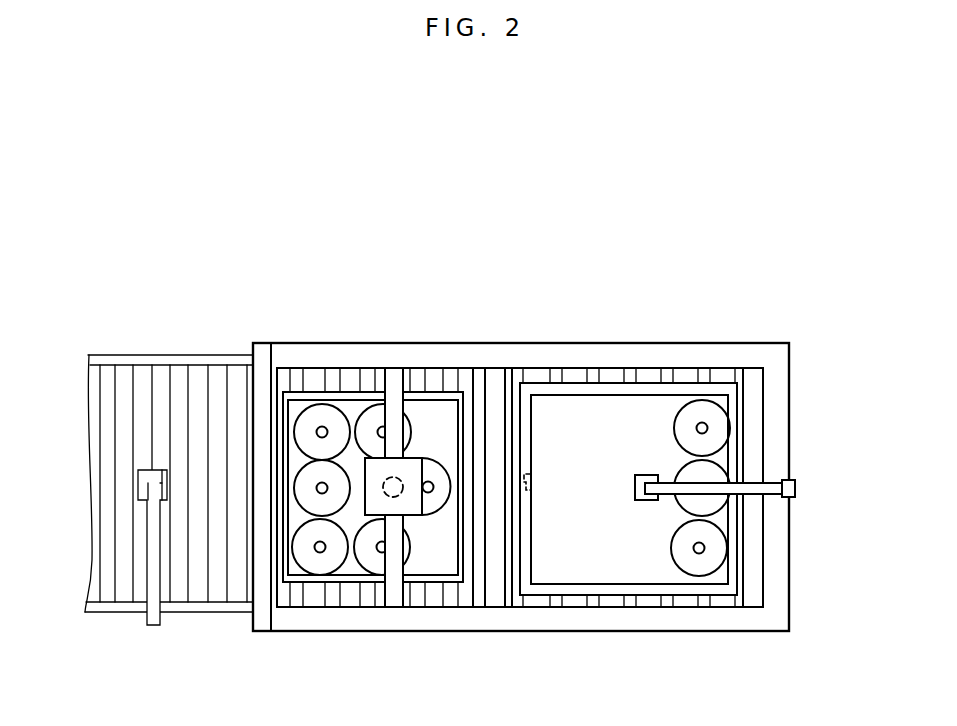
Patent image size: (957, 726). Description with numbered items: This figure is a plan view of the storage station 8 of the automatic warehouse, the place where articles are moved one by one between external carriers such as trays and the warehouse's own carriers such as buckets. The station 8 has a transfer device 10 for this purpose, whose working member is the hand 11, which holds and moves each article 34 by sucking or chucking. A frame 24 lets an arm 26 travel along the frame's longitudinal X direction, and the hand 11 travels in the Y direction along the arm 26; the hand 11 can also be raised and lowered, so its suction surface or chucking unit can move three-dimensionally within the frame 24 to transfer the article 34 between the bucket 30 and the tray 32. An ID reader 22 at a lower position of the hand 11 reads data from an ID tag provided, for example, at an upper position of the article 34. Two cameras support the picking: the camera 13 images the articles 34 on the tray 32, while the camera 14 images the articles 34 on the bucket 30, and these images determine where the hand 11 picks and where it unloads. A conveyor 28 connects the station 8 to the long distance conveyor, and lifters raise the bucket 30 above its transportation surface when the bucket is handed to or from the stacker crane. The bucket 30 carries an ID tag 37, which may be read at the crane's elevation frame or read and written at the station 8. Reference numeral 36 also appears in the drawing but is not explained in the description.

The storage station 8 is at (471, 713).
The transfer device 10 is at (533, 640).
The hand 11 is at (413, 508).
The camera 13 is at (140, 483).
The camera 14 is at (638, 474).
The ID reader 22 is at (388, 496).
The frame 24 is at (591, 610).
The arm 26 is at (396, 383).
The conveyor 28 is at (118, 616).
The bucket 30 is at (642, 566).
The tray 32 is at (295, 573).
The article 34 is at (313, 418).
The roller shaft 36 is at (323, 426).
The ID tag 37 is at (536, 478).